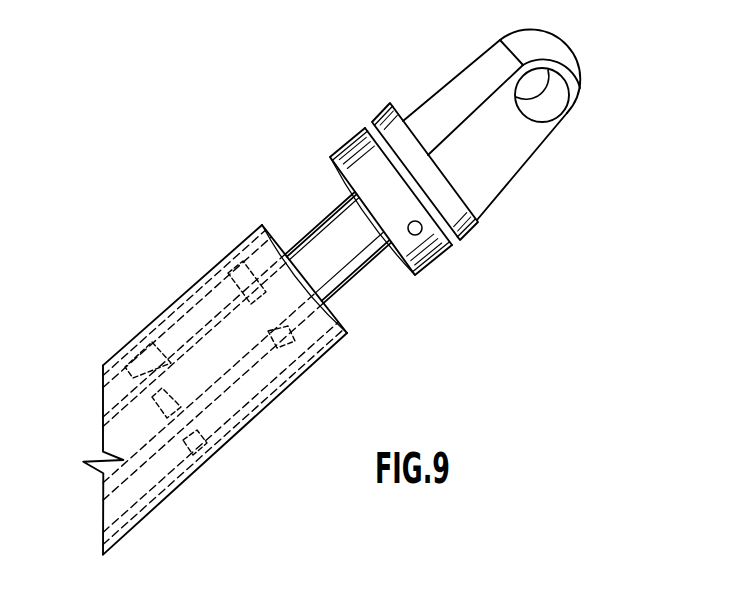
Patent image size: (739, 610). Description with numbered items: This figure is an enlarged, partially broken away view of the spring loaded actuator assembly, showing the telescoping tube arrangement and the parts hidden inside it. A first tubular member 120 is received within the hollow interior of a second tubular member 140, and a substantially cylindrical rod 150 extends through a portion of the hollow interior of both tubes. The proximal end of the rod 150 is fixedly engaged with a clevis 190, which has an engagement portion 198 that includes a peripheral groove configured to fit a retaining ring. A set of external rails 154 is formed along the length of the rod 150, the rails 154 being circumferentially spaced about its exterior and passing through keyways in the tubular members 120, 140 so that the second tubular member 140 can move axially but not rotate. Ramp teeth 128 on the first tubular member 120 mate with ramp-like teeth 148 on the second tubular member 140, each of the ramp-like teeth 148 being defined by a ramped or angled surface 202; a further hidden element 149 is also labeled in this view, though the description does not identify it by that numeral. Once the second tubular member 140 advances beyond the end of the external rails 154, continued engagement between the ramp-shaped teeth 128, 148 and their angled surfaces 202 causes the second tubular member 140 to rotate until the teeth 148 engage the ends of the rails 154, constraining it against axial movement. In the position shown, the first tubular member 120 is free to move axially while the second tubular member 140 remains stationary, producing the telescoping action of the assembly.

The first tubular member 120 is at (150, 445).
The ramp teeth 128 is at (178, 408).
The second tubular member 140 is at (160, 312).
The ramp-like teeth 148 is at (284, 323).
The lug 149 is at (160, 372).
The cylindrical rod 150 is at (323, 222).
The external rails 154 is at (215, 357).
The clevis 190 is at (488, 167).
The engagement portion 198 is at (440, 252).
The ramped or angled surface 202 is at (262, 315).